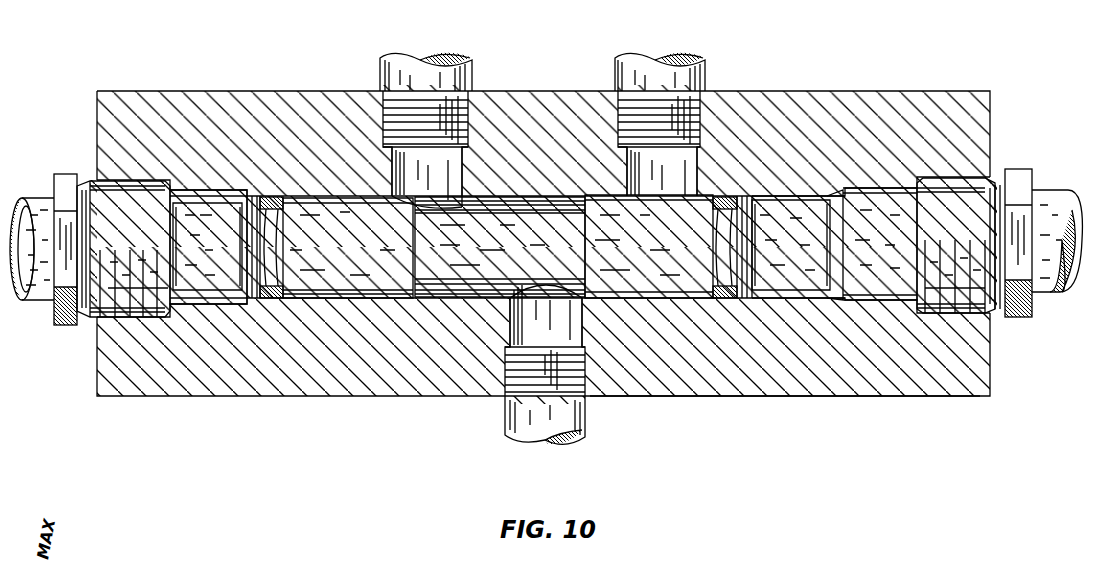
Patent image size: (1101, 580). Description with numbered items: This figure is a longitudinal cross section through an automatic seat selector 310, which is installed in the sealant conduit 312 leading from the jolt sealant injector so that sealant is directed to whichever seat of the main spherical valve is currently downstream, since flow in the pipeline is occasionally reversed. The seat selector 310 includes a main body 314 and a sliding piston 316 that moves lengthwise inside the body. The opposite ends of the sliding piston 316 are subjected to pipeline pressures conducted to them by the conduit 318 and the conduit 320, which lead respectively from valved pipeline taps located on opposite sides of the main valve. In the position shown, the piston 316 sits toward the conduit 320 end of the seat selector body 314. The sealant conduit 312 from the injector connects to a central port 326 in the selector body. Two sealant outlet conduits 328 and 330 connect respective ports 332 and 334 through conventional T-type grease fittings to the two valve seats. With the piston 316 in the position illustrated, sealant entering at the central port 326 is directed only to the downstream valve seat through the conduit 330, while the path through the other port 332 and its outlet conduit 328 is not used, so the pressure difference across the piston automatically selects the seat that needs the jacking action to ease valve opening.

The automatic seat selector 310 is at (993, 392).
The sealant conduit 312 is at (580, 413).
The main body 314 is at (780, 385).
The sliding piston 316 is at (372, 245).
The conduit 318 is at (1052, 200).
The conduit 320 is at (44, 213).
The central port 326 is at (512, 386).
The sealant outlet conduit 328 is at (703, 67).
The sealant outlet conduit 330 is at (470, 73).
The port 332 is at (692, 100).
The port 334 is at (470, 97).